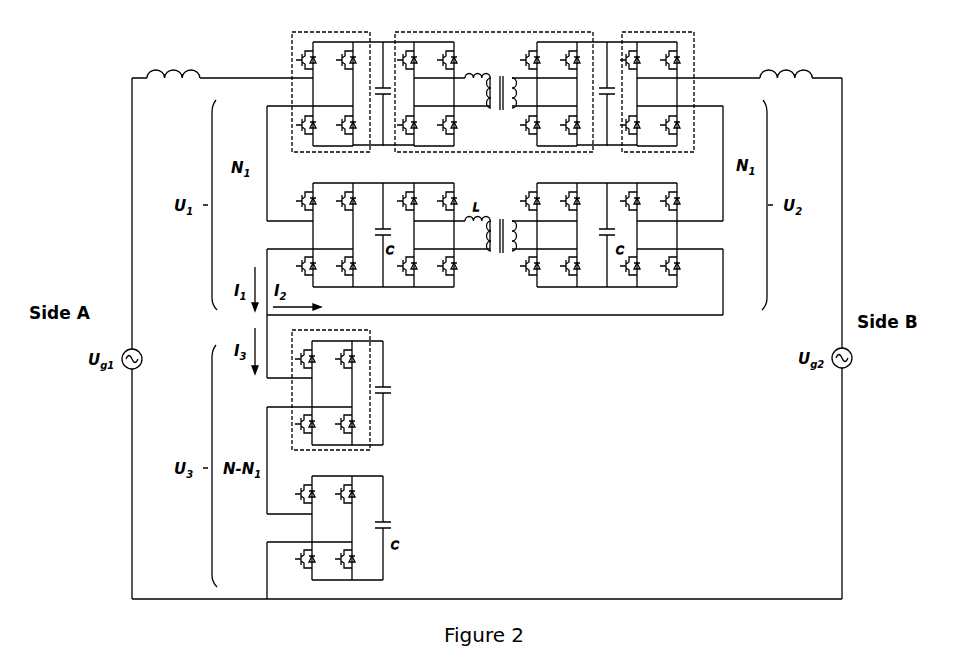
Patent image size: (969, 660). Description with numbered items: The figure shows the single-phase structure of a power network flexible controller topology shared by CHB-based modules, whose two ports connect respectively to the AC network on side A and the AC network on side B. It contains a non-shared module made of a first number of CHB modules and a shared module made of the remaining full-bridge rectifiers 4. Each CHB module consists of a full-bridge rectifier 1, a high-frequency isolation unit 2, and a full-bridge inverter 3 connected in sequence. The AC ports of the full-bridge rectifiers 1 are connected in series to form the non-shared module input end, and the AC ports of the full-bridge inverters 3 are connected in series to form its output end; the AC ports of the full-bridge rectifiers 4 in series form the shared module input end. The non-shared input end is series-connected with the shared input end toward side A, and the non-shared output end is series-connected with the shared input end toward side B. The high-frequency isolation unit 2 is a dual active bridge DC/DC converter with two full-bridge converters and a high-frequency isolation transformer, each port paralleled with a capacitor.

The full bridge rectifier 1 is at (310, 32).
The high frequency isolation unit 2 is at (467, 31).
The full bridge inverter 3 is at (640, 32).
The full bridge rectifier 4 is at (370, 333).